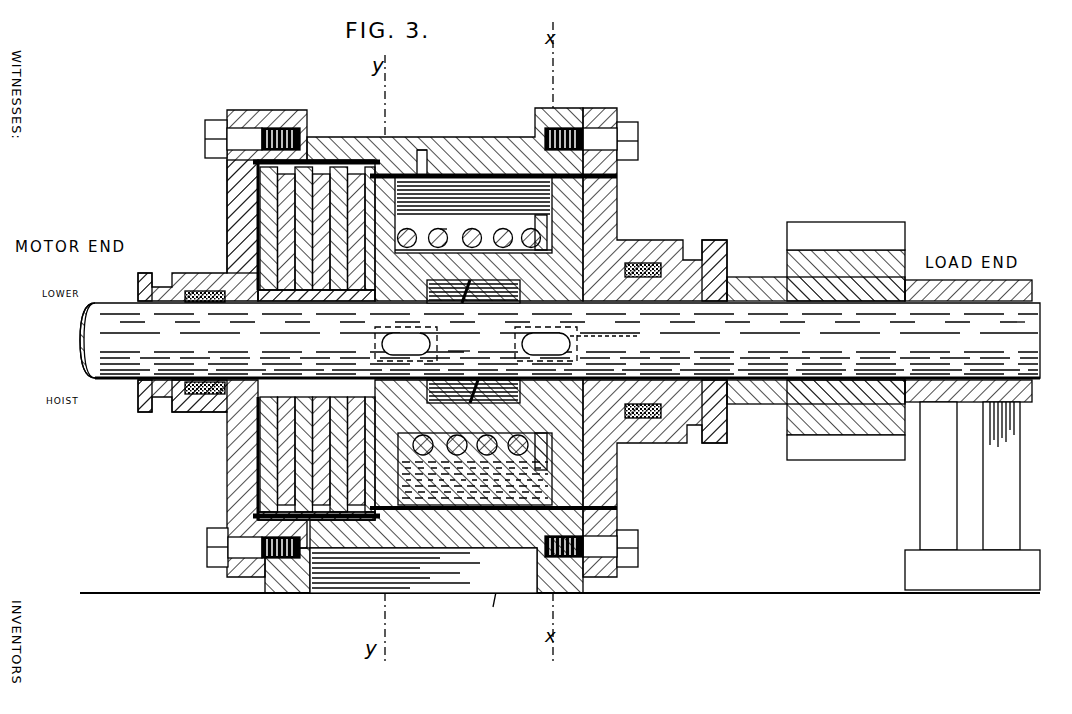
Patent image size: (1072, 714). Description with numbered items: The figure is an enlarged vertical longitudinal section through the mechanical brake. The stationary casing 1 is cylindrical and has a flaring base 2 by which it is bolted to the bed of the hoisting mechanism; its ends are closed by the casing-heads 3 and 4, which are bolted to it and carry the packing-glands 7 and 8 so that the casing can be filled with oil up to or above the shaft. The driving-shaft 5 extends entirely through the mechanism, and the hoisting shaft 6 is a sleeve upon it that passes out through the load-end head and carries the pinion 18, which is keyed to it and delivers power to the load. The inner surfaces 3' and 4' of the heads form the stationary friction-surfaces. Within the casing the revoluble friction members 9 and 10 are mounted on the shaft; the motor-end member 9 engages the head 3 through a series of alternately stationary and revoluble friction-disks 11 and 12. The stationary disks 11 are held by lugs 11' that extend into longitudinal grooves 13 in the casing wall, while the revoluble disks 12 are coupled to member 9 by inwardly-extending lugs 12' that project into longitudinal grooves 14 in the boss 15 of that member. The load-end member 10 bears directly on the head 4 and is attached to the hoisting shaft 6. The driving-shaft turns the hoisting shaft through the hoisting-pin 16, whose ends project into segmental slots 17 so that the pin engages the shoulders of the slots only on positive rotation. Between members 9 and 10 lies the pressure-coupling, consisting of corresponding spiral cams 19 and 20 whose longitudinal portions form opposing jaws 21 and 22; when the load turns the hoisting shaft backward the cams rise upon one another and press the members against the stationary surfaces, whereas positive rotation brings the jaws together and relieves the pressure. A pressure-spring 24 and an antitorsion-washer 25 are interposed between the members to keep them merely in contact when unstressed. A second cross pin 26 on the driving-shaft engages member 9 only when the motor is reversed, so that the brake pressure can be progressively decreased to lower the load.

The stationary casing 1 is at (453, 137).
The flaring base 2 is at (470, 358).
The casing-head 3 is at (256, 351).
The inner surface of head 3' is at (225, 216).
The casing-head 4 is at (655, 387).
The inner surface of head 4' is at (655, 204).
The driving-shaft 5 is at (121, 362).
The hoisting shaft 6 is at (749, 277).
The packing-gland 7 is at (145, 275).
The packing-gland 8 is at (713, 240).
The friction member 9 is at (424, 150).
The friction member 10 is at (528, 175).
The stationary friction-disks 11 is at (282, 304).
The lugs 11' is at (318, 298).
The revoluble friction-disks 12 is at (273, 298).
The inwardly-extending lugs 12' is at (277, 339).
The longitudinal grooves 13 is at (258, 163).
The longitudinal grooves 14 is at (318, 283).
The boss 15 is at (197, 412).
The hoisting-pin 16 is at (562, 344).
The segmental slots 17 is at (618, 319).
The pinion 18 is at (850, 230).
The spiral cam 19 is at (446, 231).
The spiral cam 20 is at (480, 231).
The jaw 21 is at (397, 337).
The jaw 22 is at (473, 345).
The pressure-spring 24 is at (442, 229).
The antitorsion-washer 25 is at (549, 233).
The cross pin 26 is at (382, 343).